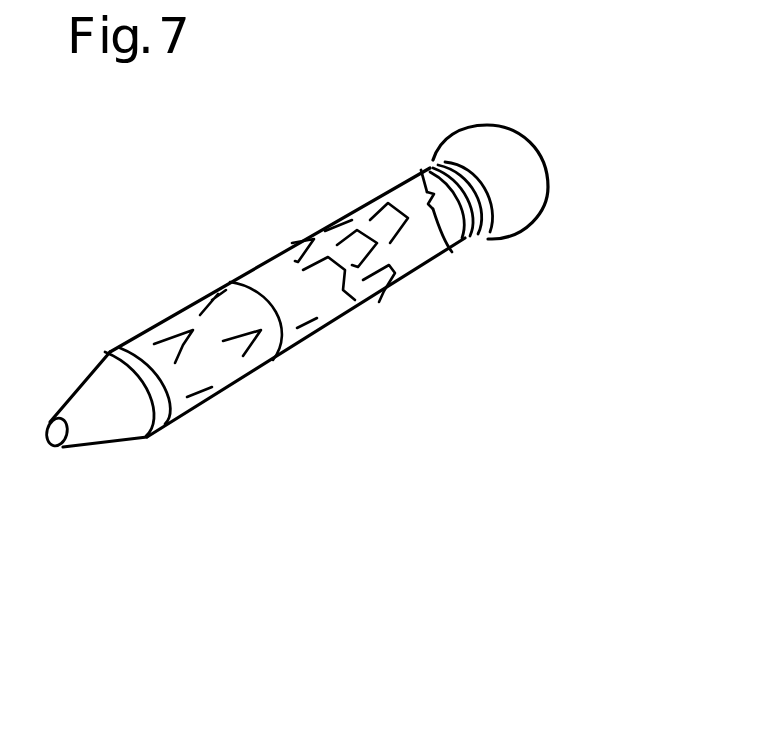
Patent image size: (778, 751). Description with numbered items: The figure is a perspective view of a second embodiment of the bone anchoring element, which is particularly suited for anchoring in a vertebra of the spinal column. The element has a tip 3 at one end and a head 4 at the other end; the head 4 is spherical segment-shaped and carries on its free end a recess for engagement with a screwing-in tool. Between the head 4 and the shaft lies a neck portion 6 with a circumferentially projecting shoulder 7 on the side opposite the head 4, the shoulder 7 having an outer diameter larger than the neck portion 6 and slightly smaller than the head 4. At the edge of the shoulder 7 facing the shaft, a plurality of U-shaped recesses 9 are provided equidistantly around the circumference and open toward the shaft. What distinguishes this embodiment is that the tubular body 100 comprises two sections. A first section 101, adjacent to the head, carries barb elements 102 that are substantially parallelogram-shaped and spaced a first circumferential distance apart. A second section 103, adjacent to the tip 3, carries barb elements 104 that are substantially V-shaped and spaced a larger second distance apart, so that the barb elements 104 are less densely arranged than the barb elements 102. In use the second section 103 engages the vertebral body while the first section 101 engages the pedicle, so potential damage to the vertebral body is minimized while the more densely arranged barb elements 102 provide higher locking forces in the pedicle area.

The tip 3 is at (99, 423).
The head 4 is at (527, 169).
The neck portion 6 is at (467, 243).
The shoulder 7 is at (452, 252).
The U-shaped recesses 9 is at (430, 190).
The tubular body 100 is at (251, 264).
The first section 101 is at (350, 213).
The barb elements 102 is at (330, 275).
The second section 103 is at (177, 307).
The barb elements 104 is at (181, 353).